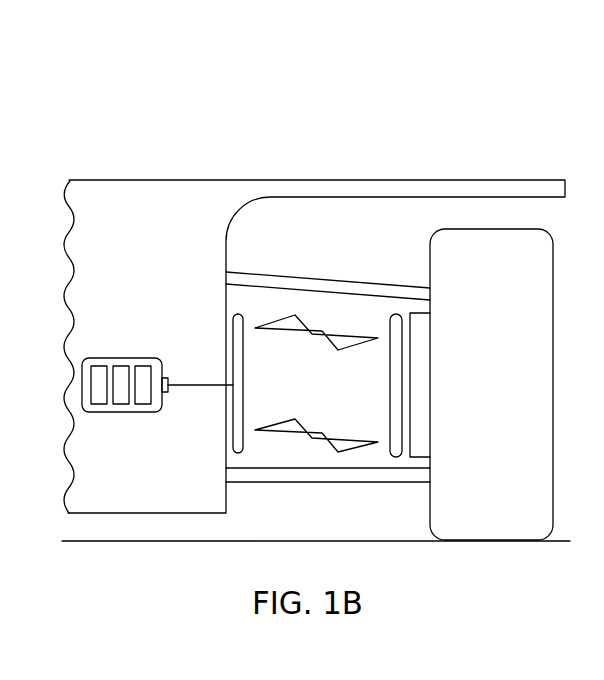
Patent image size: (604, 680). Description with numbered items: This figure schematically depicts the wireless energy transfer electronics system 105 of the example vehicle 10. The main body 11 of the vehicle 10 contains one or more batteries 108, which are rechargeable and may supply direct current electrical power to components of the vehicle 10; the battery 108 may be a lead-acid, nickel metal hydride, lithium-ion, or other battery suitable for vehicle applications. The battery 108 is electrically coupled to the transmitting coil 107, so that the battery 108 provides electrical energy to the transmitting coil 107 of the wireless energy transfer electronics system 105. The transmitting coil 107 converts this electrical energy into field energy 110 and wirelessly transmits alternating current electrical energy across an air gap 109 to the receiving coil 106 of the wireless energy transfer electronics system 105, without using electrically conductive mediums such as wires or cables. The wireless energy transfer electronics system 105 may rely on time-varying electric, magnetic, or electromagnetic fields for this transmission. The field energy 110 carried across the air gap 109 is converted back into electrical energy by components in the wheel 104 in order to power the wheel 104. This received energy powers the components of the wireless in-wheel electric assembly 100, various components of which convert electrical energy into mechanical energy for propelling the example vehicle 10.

The example vehicle 10 is at (316, 319).
The main body 11 is at (314, 312).
The wireless in-wheel electric assembly 100 is at (491, 344).
The wheel 104 is at (328, 343).
The wireless energy transfer electronics system 105 is at (316, 564).
The receiving coil 106 is at (402, 350).
The transmitting coil 107 is at (230, 437).
The battery 108 is at (104, 413).
The air gap 109 is at (319, 477).
The field energy 110 is at (272, 327).